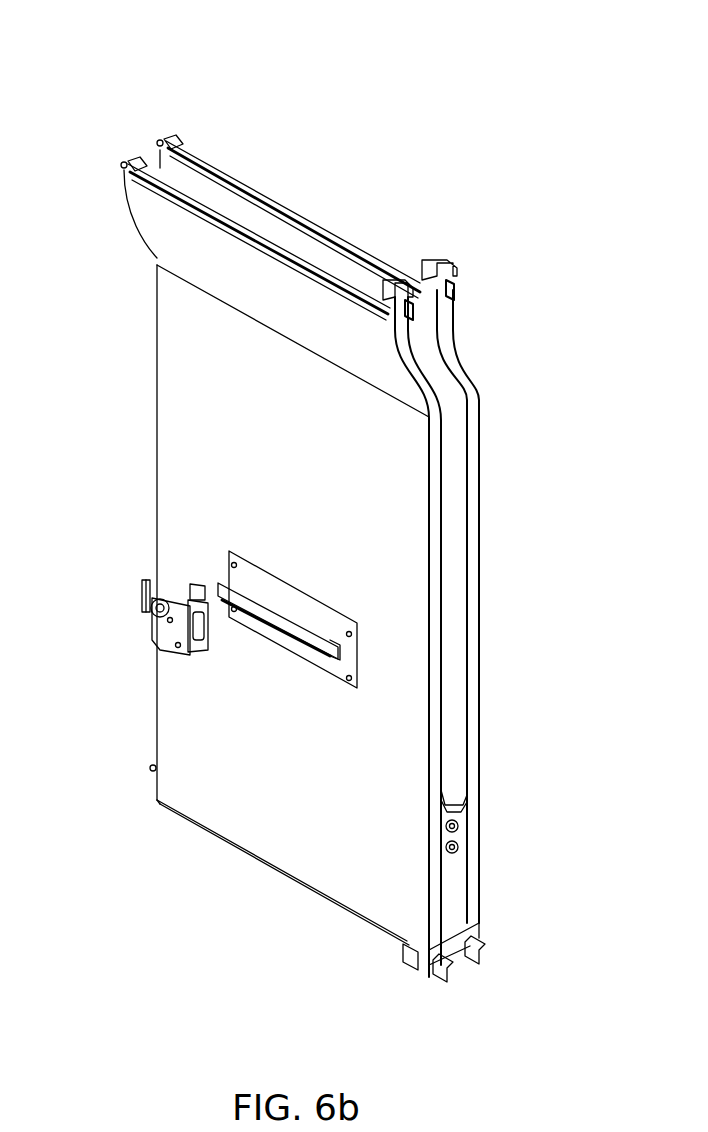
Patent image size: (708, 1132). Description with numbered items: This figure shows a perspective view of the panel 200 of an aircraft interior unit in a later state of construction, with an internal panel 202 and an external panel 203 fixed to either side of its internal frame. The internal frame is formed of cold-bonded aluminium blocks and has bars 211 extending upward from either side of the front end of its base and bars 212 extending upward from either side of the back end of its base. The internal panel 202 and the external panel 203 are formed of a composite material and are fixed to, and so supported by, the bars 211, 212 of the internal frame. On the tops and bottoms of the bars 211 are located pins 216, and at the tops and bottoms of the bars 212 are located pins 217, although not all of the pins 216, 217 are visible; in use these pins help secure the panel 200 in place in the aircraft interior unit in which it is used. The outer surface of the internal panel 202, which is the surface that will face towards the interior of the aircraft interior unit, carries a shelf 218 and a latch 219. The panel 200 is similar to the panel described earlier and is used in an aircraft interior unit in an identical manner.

The panel 200 is at (590, 119).
The internal panel 202 is at (195, 690).
The external panel 203 is at (448, 497).
The bars 211 is at (164, 158).
The bars 212 is at (430, 630).
The pins 216 is at (158, 141).
The pins 217 is at (385, 280).
The shelf 218 is at (283, 602).
The latch 219 is at (143, 585).